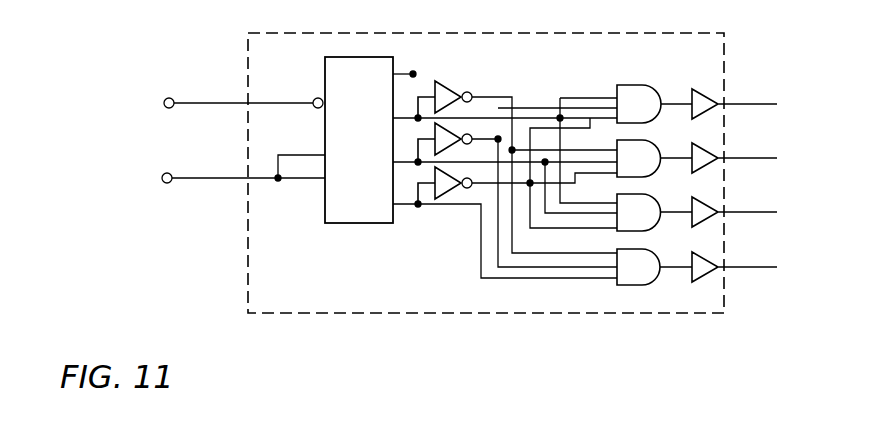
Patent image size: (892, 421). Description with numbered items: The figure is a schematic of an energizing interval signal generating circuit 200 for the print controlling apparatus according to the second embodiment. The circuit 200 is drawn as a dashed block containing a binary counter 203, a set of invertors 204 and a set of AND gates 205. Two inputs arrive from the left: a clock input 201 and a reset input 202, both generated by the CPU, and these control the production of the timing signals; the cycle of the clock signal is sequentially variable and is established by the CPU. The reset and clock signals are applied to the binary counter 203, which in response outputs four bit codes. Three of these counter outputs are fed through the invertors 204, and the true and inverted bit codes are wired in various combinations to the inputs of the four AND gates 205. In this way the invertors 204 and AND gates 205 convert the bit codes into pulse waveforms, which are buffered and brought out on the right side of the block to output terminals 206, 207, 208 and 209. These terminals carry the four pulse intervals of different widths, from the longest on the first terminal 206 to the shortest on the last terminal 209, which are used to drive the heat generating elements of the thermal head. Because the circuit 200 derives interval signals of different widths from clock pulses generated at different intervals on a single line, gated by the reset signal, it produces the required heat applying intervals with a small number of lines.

The energizing interval signal generating circuit 200 is at (646, 40).
The CLOCK input 201 is at (176, 104).
The RESET input 202 is at (182, 173).
The binary counter 203 is at (378, 22).
The invertors 204 is at (447, 138).
The AND gates 205 is at (647, 150).
The output terminal 206 is at (766, 104).
The output terminal 207 is at (770, 158).
The output terminal 208 is at (768, 212).
The output terminal 209 is at (768, 267).